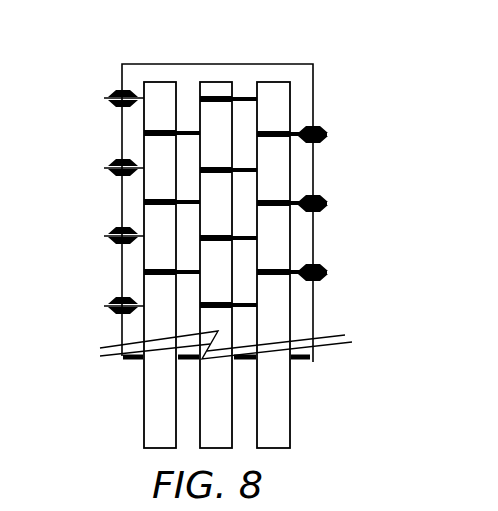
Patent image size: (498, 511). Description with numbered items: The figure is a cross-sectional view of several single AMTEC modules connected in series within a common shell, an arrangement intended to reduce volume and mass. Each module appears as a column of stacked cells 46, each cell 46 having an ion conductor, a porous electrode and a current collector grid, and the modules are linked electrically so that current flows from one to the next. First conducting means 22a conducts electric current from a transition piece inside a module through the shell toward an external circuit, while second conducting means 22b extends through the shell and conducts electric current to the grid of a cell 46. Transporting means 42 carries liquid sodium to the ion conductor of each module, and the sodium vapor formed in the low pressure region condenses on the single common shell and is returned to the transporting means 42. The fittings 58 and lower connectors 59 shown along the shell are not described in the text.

The first conducting means 22a is at (227, 97).
The second conducting means 22b is at (137, 95).
The transporting means 42 is at (161, 367).
The cell 46 is at (160, 153).
The fitting 58 is at (122, 96).
The lower connector 59 is at (189, 362).